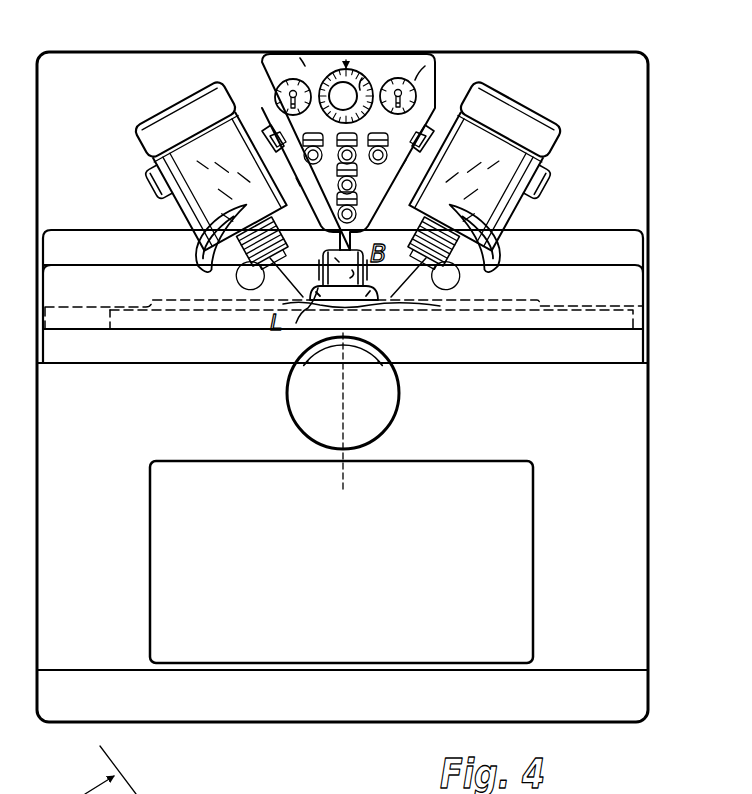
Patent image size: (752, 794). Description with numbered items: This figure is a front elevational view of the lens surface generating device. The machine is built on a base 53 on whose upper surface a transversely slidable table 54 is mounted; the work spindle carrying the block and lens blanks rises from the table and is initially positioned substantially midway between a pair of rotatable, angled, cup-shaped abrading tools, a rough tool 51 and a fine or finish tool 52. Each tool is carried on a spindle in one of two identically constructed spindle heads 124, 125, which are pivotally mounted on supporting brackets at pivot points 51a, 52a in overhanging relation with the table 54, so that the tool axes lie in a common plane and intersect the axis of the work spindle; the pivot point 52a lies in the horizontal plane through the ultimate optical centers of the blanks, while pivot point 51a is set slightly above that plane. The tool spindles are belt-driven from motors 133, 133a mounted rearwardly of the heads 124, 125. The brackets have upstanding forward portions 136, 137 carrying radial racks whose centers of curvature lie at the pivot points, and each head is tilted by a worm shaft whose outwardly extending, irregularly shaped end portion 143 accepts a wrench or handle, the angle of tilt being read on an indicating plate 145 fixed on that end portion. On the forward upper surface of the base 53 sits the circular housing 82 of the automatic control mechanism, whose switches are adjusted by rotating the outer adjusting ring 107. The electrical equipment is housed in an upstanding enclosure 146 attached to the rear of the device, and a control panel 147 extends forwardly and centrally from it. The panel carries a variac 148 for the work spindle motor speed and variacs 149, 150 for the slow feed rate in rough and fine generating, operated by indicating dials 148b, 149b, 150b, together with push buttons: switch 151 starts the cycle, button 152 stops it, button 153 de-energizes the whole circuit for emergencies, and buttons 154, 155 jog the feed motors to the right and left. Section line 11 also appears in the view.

The section line 11 is at (330, 325).
The rough abrading tool 51 is at (441, 272).
The pivot point 51a is at (418, 296).
The fine abrading tool 52 is at (243, 274).
The pivot point 52a is at (256, 264).
The base 53 is at (640, 428).
The table 54 is at (607, 321).
The circular housing 82 is at (390, 396).
The adjusting ring 107 is at (397, 379).
The spindle head 124 is at (522, 166).
The spindle head 125 is at (196, 200).
The motor 133 is at (536, 180).
The motor 133a is at (160, 180).
The upstanding forward portion 136 is at (300, 222).
The upstanding forward portion 137 is at (352, 212).
The irregularly shaped end portion 143 is at (263, 128).
The indicating plate 145 is at (270, 141).
The upstanding enclosure 146 is at (640, 103).
The control panel 147 is at (383, 67).
The variac 148 is at (345, 62).
The indicating dial 148b is at (368, 58).
The variac 149 is at (388, 78).
The indicating dial 149b is at (426, 65).
The variac 150 is at (302, 80).
The indicating dial 150b is at (304, 57).
The push button switch 151 is at (353, 179).
The push button 152 is at (340, 242).
The push button 153 is at (350, 142).
The push button 154 is at (402, 169).
The push button 155 is at (303, 147).